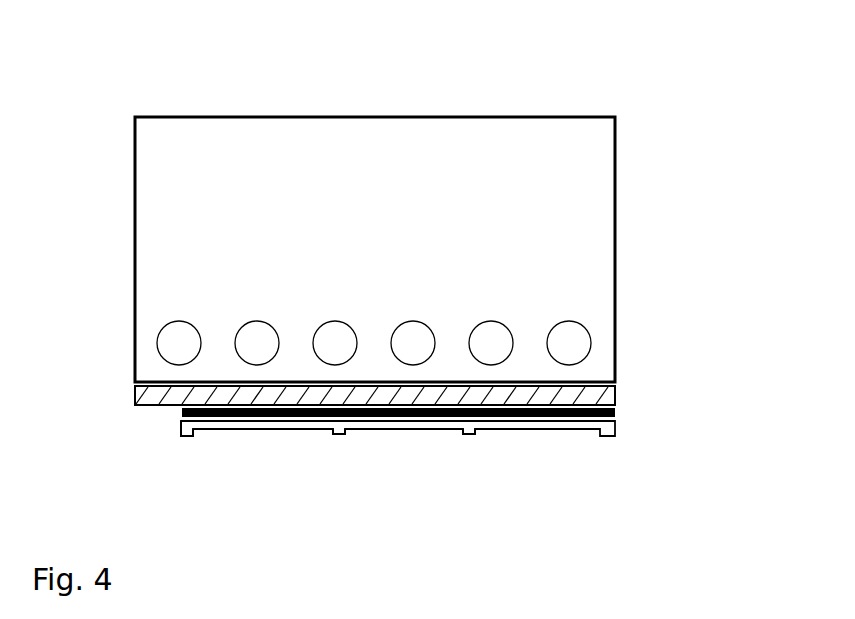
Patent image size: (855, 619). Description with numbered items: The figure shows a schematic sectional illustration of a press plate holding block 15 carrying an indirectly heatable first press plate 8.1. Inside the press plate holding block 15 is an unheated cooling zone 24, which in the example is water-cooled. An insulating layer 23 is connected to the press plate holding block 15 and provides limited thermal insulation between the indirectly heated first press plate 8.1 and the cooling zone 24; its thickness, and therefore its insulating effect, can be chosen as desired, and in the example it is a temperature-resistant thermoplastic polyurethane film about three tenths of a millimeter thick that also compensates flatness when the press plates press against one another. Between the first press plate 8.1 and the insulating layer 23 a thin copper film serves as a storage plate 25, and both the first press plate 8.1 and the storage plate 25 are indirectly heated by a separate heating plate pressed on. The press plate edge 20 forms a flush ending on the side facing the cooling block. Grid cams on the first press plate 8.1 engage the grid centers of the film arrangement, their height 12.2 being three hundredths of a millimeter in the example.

The press plate holding block 15 is at (570, 116).
The cooling zone 24 is at (448, 362).
The insulating layer 23 is at (593, 395).
The storage plate 25 is at (615, 413).
The press plate edge 20 is at (617, 430).
The height of grid cam 12.2 is at (352, 439).
The first press plate 8.1 is at (535, 421).